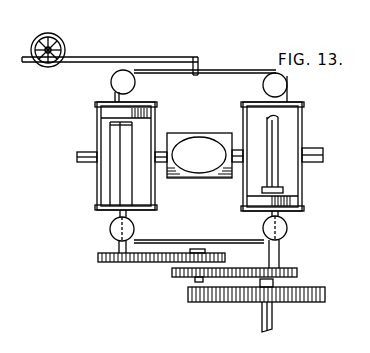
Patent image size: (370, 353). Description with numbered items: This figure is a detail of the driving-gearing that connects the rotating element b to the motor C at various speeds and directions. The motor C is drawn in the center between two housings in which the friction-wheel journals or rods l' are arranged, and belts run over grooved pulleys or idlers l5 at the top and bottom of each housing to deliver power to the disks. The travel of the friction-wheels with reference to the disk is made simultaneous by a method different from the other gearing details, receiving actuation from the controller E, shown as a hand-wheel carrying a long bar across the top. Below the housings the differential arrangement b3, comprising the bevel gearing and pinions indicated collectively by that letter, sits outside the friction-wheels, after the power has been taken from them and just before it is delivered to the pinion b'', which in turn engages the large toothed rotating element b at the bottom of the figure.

The controller E is at (50, 41).
The pulleys l5 is at (198, 155).
The piston rods l' is at (196, 160).
The motor C is at (199, 155).
The differential arrangement b3 is at (187, 266).
The rotating element b is at (257, 287).
The pinion b'' is at (225, 317).